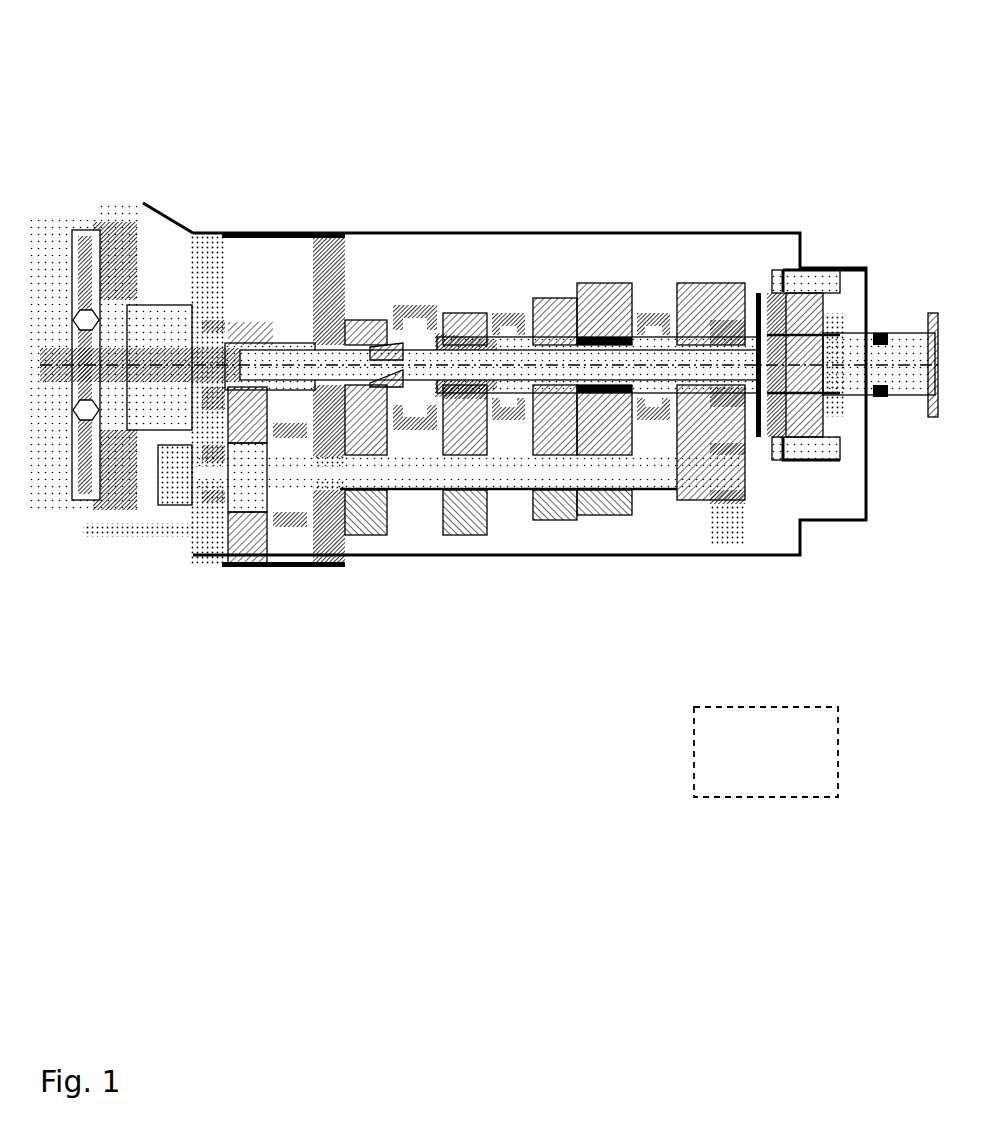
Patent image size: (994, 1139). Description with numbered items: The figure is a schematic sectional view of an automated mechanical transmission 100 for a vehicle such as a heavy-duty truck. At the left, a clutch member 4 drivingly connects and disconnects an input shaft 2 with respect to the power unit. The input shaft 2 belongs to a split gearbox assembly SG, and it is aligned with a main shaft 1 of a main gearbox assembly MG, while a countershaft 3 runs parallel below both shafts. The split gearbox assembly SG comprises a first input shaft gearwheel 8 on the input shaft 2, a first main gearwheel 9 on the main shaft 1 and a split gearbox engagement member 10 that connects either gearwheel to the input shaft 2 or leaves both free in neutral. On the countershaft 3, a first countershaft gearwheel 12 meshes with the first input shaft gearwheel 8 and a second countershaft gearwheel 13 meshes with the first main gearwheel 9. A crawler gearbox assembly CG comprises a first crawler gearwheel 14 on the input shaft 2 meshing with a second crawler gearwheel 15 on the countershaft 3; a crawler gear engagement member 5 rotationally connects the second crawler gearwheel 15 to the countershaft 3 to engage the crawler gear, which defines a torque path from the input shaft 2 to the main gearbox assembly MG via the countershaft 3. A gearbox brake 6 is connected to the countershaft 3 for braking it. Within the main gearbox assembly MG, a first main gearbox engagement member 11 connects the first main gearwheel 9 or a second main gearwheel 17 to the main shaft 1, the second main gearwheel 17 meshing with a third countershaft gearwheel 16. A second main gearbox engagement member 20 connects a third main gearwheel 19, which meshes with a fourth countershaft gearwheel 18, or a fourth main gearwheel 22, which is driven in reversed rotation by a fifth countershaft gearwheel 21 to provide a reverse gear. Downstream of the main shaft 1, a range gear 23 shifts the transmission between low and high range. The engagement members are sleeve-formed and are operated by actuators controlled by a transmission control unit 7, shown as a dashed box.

The main shaft 1 is at (697, 350).
The input shaft 2 is at (280, 337).
The countershaft 3 is at (503, 480).
The clutch member 4 is at (80, 220).
The crawler gear engagement member 5 is at (278, 560).
The gearbox brake 6 is at (170, 500).
The transmission control unit 7 is at (782, 770).
The first input shaft gearwheel 8 is at (325, 232).
The first main gearwheel 9 is at (455, 320).
The split gearbox engagement member 10 is at (418, 420).
The first main gearbox engagement member 11 is at (513, 318).
The first countershaft gearwheel 12 is at (370, 540).
The second countershaft gearwheel 13 is at (460, 530).
The first crawler gearwheel 14 is at (223, 232).
The second crawler gearwheel 15 is at (222, 565).
The third countershaft gearwheel 16 is at (547, 518).
The second main gearwheel 17 is at (553, 298).
The fourth countershaft gearwheel 18 is at (620, 500).
The third main gearwheel 19 is at (600, 283).
The second main gearbox engagement member 20 is at (655, 317).
The fifth countershaft gearwheel 21 is at (693, 500).
The fourth main gearwheel 22 is at (735, 290).
The range gear 23 is at (823, 468).
The automated mechanical transmission 100 is at (600, 115).
The split gearbox assembly SG is at (390, 283).
The main gearbox assembly MG is at (642, 258).
The crawler gearbox assembly CG is at (290, 545).